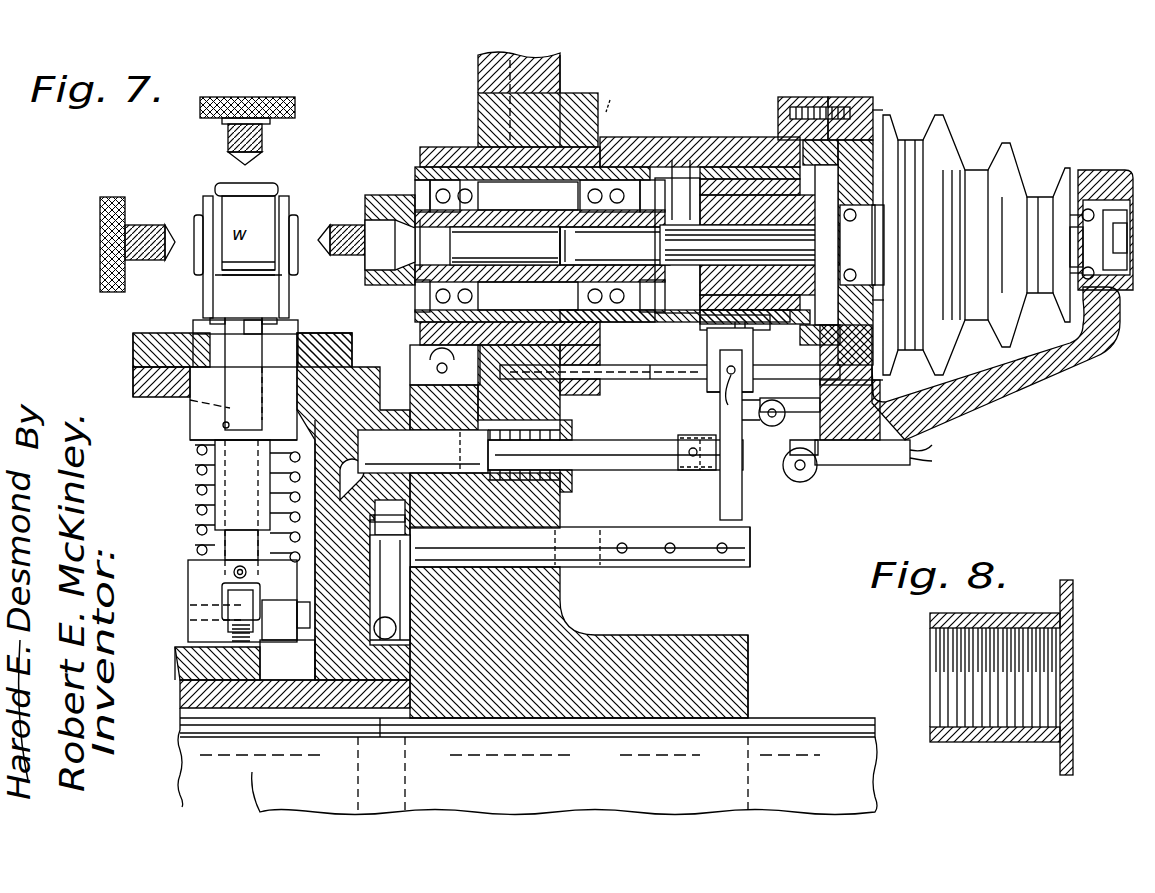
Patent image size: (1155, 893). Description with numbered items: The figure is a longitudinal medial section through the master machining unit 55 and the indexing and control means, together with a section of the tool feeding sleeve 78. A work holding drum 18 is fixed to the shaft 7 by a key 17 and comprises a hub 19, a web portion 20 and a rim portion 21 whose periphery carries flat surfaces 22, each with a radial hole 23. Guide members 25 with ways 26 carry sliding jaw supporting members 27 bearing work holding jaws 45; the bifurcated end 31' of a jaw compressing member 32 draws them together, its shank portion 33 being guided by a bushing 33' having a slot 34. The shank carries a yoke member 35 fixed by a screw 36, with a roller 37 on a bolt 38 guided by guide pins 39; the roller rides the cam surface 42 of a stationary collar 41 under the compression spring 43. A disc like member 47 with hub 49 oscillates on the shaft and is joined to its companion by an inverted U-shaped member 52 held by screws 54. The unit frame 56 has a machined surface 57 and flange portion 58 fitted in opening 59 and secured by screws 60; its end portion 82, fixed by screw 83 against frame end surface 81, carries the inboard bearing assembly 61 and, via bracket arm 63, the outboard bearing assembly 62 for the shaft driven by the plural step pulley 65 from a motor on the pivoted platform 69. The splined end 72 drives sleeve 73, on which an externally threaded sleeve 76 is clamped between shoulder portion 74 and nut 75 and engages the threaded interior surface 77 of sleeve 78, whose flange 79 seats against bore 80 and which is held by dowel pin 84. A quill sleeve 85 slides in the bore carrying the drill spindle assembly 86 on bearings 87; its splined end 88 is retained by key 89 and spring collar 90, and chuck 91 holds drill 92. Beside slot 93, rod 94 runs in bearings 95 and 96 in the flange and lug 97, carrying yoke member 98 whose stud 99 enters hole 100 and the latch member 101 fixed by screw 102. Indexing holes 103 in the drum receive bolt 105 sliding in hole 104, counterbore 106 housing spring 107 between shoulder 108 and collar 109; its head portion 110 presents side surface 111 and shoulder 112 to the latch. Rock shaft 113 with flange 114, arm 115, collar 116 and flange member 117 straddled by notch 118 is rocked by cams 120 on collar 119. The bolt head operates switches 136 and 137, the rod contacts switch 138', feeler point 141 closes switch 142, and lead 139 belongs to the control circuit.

In FIG. 7, the shaft 7 is at (800, 722).
In FIG. 7, the key 17 is at (182, 712).
In FIG. 7, the work holding drum 18 is at (130, 388).
In FIG. 7, the hub 19 is at (190, 691).
In FIG. 7, the web portion 20 is at (353, 506).
In FIG. 7, the rim portion 21 is at (133, 378).
In FIG. 7, the flat surfaces 22 is at (133, 352).
In FIG. 7, the hole 23 is at (200, 398).
In FIG. 7, the guide members 25 is at (140, 328).
In FIG. 7, the ways 26 is at (184, 334).
In FIG. 7, the jaw supporting members 27 is at (272, 367).
In FIG. 7, the bifurcated end 31' is at (257, 311).
In FIG. 7, the jaw compressing member 32 is at (232, 318).
In FIG. 7, the shank portion 33 is at (202, 507).
In FIG. 7, the bushing 33' is at (183, 430).
In FIG. 7, the slot 34 is at (222, 430).
In FIG. 7, the yoke member 35 is at (188, 592).
In FIG. 7, the screw 36 is at (232, 572).
In FIG. 7, the roller 37 is at (250, 598).
In FIG. 7, the bolt 38 is at (215, 618).
In FIG. 7, the guide pins 39 is at (278, 645).
In FIG. 7, the stationary collar 41 is at (180, 661).
In FIG. 7, the cam surface 42 is at (180, 646).
In FIG. 7, the compression spring 43 is at (195, 518).
In FIG. 7, the work holding jaws 45 is at (205, 205).
In FIG. 7, the disc like member 47 is at (478, 100).
In FIG. 7, the hub 49 is at (748, 640).
In FIG. 7, the inverted U-shaped member 52 is at (476, 66).
In FIG. 7, the screws 54 is at (490, 110).
In FIG. 7, the machining unit 55 is at (700, 135).
In FIG. 7, the frame 56 is at (732, 138).
In FIG. 7, the cylindrical machined surface 57 is at (440, 168).
In FIG. 7, the flange portion 58 is at (590, 105).
In FIG. 7, the opening 59 is at (470, 150).
In FIG. 7, the screws 60 is at (620, 100).
In FIG. 7, the inboard bearing assembly 61 is at (860, 200).
In FIG. 7, the outboard bearing assembly 62 is at (1088, 205).
In FIG. 7, the bracket arm 63 is at (1060, 375).
In FIG. 7, the plural step pulley 65 is at (960, 160).
In FIG. 7, the pivoted platform 69 is at (857, 245).
In FIG. 7, the splined end 72 is at (750, 245).
In FIG. 7, the sleeve 73 is at (885, 250).
In FIG. 7, the shoulder portion 74 is at (747, 228).
In FIG. 7, the nut 75 is at (885, 300).
In FIG. 7, the externally threaded sleeve 76 is at (765, 239).
In FIG. 8, the threaded interior surface 77 is at (940, 630).
In FIG. 7, the sleeve 78 is at (755, 235).
In FIG. 8, the sleeve 78 is at (996, 622).
In FIG. 8, the flange 79 is at (1070, 582).
In FIG. 7, the bore 80 is at (672, 185).
In FIG. 7, the frame end surface 81 is at (835, 100).
In FIG. 7, the end portion 82 is at (826, 242).
In FIG. 7, the screw 83 is at (855, 97).
In FIG. 7, the dowel pin 84 is at (790, 145).
In FIG. 7, the quill sleeve 85 is at (655, 165).
In FIG. 7, the drill spindle assembly 86 is at (545, 204).
In FIG. 7, the bearings 87 is at (425, 172).
In FIG. 7, the splined end 88 is at (615, 258).
In FIG. 7, the key 89 is at (526, 246).
In FIG. 7, the spring collar 90 is at (688, 162).
In FIG. 7, the chuck 91 is at (388, 200).
In FIG. 7, the drill 92 is at (338, 226).
In FIG. 7, the slot 93 is at (600, 353).
In FIG. 7, the rod 94 is at (658, 368).
In FIG. 7, the bearing 95 is at (598, 385).
In FIG. 7, the bearing 96 is at (850, 410).
In FIG. 7, the lug 97 is at (846, 355).
In FIG. 7, the yoke member 98 is at (712, 392).
In FIG. 7, the stud 99 is at (717, 330).
In FIG. 7, the hole 100 is at (710, 352).
In FIG. 7, the latch member 101 is at (745, 498).
In FIG. 7, the screw 102 is at (725, 410).
In FIG. 7, the holes 103 is at (365, 519).
In FIG. 7, the hole 104 is at (449, 407).
In FIG. 7, the plunger or bolt 105 is at (423, 451).
In FIG. 7, the counterbore 106 is at (519, 382).
In FIG. 7, the compression spring 107 is at (575, 424).
In FIG. 7, the shoulder 108 is at (485, 500).
In FIG. 7, the collar 109 is at (575, 484).
In FIG. 7, the head portion 110 is at (685, 470).
In FIG. 7, the side surface 111 is at (700, 472).
In FIG. 7, the shoulder 112 is at (660, 448).
In FIG. 7, the rock shaft 113 is at (580, 547).
In FIG. 7, the flange 114 is at (405, 572).
In FIG. 7, the arm 115 is at (385, 605).
In FIG. 7, the collar 116 is at (570, 588).
In FIG. 7, the flange member 117 is at (752, 520).
In FIG. 7, the notch 118 is at (712, 528).
In FIG. 7, the collar 119 is at (380, 725).
In FIG. 7, the cams 120 is at (392, 650).
In FIG. 7, the switch 136 is at (818, 472).
In FIG. 7, the switch 137 is at (782, 472).
In FIG. 7, the switch 138' is at (579, 327).
In FIG. 7, the lead 139 is at (425, 362).
In FIG. 7, the feeler point 141 is at (748, 416).
In FIG. 7, the switch 142 is at (873, 440).